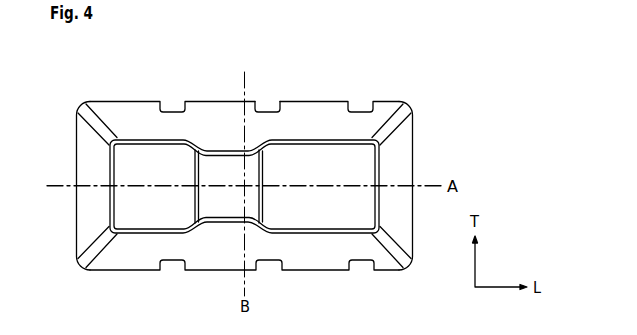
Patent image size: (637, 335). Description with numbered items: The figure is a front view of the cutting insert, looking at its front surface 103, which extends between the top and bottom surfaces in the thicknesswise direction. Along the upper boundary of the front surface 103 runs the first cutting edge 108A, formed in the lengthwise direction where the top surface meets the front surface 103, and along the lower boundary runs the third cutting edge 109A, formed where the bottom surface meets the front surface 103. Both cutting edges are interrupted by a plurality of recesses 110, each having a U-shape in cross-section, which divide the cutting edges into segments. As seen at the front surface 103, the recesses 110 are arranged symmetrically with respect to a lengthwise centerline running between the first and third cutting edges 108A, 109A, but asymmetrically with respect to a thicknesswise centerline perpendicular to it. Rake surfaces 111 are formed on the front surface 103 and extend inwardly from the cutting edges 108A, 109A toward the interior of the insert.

The front surface 103 is at (358, 176).
The recesses 110 is at (266, 110).
The third cutting edge 109A is at (313, 102).
The first cutting edge 108A is at (315, 271).
The rake surfaces 111 is at (140, 127).